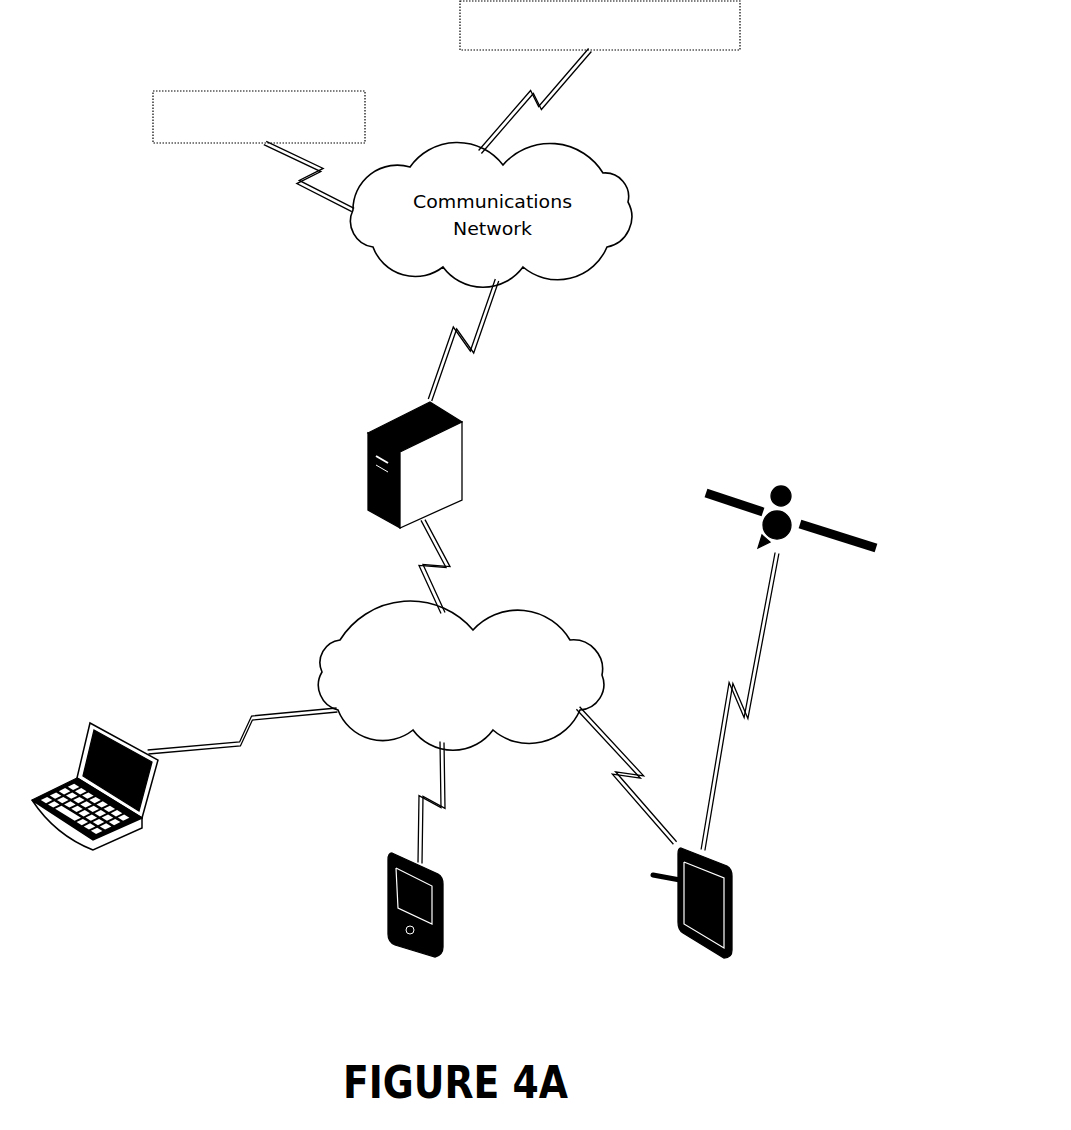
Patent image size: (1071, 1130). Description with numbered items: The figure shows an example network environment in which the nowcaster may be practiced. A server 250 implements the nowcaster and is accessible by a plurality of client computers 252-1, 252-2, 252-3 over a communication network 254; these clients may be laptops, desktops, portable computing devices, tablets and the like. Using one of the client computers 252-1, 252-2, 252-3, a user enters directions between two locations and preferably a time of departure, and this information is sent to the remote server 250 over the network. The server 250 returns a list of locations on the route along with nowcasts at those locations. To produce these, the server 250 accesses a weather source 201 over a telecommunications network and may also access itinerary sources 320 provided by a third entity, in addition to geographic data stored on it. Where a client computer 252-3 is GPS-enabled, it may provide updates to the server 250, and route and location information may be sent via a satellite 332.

The weather source 201 is at (600, 77).
The itinerary sources 320 is at (259, 151).
The server 250 is at (368, 453).
The communication network 254 is at (460, 675).
The satellite 332 is at (768, 490).
The client computer 252-1 is at (101, 793).
The client computer 252-2 is at (446, 905).
The client computer 252-3 is at (686, 907).